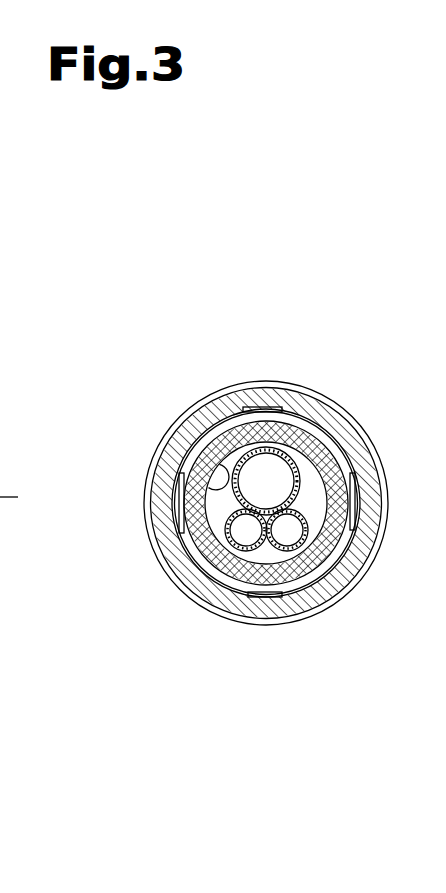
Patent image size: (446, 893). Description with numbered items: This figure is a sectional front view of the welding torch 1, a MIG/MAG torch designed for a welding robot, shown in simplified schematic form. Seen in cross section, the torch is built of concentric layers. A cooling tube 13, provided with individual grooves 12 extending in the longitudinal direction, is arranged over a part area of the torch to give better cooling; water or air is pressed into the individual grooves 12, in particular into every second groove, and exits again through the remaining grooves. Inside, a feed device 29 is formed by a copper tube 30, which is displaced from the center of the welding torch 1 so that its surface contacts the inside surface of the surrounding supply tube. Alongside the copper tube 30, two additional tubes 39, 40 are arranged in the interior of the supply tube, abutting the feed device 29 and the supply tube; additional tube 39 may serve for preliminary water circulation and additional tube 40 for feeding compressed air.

The welding torch 1 is at (340, 305).
The grooves 12 is at (310, 413).
The cooling tube 13 is at (192, 542).
The feed device 29 is at (262, 472).
The copper tube 30 is at (197, 443).
The additional tube 39 is at (287, 537).
The additional tube 40 is at (247, 533).